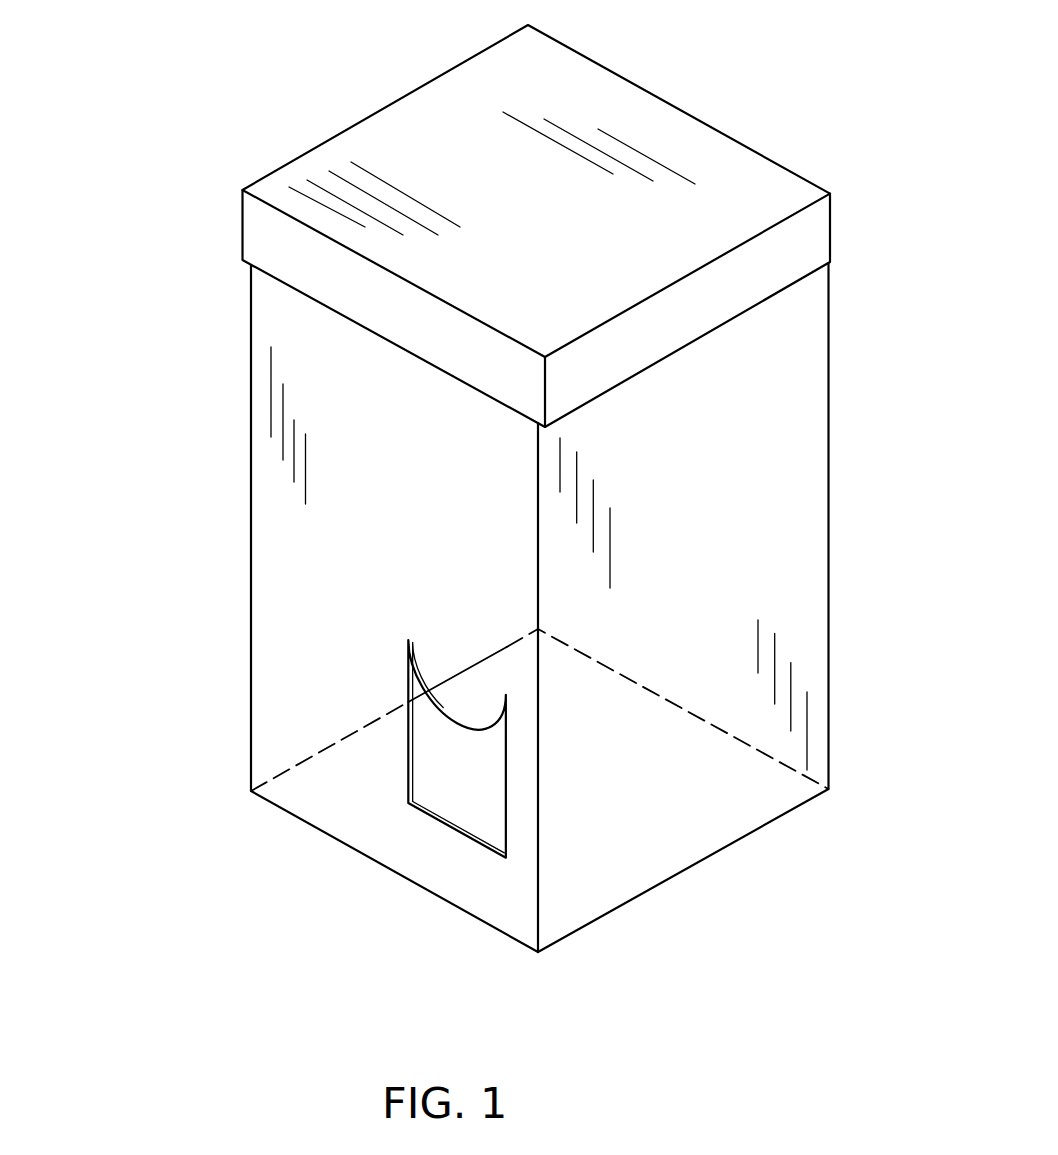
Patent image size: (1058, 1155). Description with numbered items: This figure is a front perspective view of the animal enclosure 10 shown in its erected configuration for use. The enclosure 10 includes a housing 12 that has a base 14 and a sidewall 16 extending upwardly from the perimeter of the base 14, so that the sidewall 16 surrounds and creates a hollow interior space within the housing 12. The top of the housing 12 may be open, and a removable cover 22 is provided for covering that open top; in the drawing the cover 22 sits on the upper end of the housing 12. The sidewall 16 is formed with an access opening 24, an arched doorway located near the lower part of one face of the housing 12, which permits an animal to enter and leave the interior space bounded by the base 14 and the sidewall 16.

The animal enclosure 10 is at (137, 165).
The housing 12 is at (806, 471).
The base 14 is at (460, 750).
The sidewall 16 is at (277, 502).
The removable cover 22 is at (764, 159).
The access opening 24 is at (412, 667).